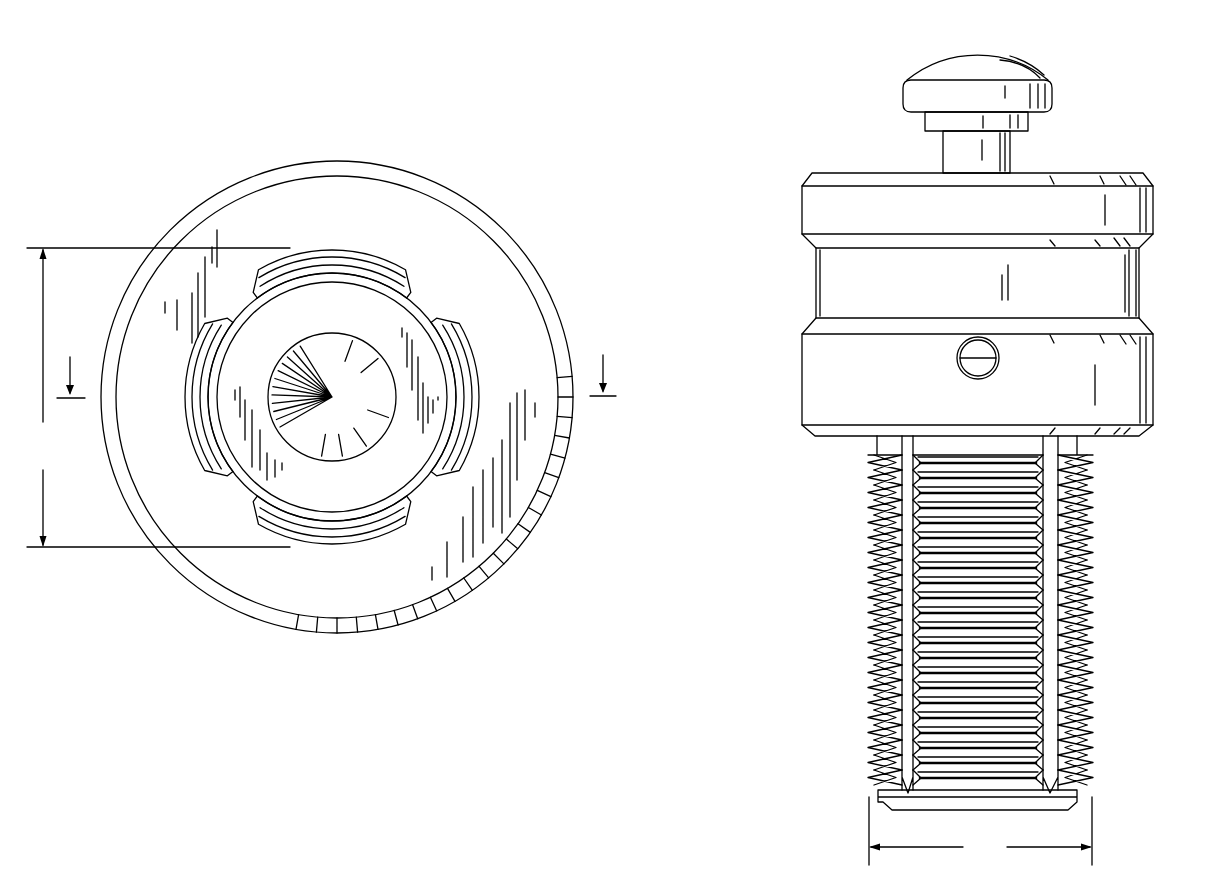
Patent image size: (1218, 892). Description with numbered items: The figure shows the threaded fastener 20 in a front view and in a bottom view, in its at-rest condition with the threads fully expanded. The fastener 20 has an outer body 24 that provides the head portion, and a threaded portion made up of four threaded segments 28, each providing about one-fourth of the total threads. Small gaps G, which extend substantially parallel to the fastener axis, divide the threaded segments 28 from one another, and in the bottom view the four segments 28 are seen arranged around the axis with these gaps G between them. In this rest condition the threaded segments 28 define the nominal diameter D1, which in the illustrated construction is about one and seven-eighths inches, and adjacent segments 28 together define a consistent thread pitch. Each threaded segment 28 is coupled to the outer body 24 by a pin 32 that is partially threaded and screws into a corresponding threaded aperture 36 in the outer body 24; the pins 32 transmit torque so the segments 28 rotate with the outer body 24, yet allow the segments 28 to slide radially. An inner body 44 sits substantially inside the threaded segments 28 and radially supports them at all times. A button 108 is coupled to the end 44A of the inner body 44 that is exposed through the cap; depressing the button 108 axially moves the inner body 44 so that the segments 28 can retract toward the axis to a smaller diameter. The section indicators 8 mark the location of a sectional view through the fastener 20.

In FIG. 3, the threaded fastener 20 is at (258, 128).
In FIG. 2, the threaded fastener 20 is at (1150, 120).
In FIG. 3, the outer body 24 is at (448, 237).
In FIG. 2, the outer body 24 is at (815, 212).
In FIG. 3, the threaded segments 28 is at (318, 250).
In FIG. 2, the threaded segments 28 is at (872, 650).
In FIG. 2, the pin 32 is at (978, 348).
In FIG. 2, the threaded aperture 36 is at (972, 377).
In FIG. 3, the inner body 44 is at (362, 312).
In FIG. 2, the inner body 44 is at (960, 807).
In FIG. 2, the end of the inner body 44A is at (957, 152).
In FIG. 2, the button 108 is at (935, 68).
In FIG. 3, the gaps G is at (242, 300).
In FIG. 2, the gaps G is at (905, 587).
In FIG. 3, the section line 8 is at (336, 364).
In FIG. 3, the nominal diameter D1 is at (158, 397).
In FIG. 2, the nominal diameter D1 is at (980, 831).